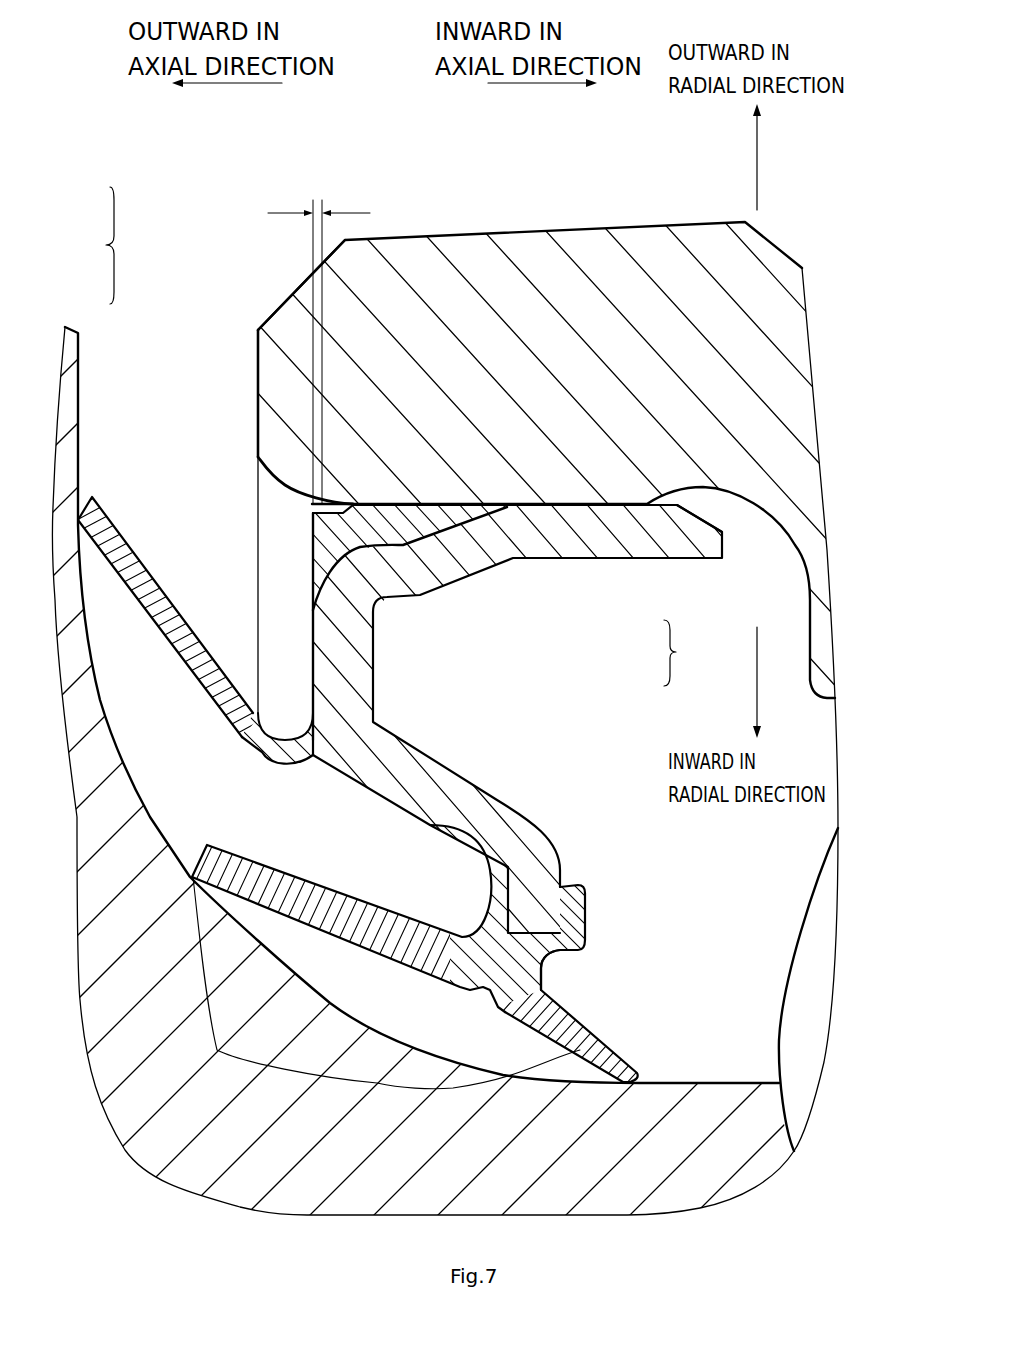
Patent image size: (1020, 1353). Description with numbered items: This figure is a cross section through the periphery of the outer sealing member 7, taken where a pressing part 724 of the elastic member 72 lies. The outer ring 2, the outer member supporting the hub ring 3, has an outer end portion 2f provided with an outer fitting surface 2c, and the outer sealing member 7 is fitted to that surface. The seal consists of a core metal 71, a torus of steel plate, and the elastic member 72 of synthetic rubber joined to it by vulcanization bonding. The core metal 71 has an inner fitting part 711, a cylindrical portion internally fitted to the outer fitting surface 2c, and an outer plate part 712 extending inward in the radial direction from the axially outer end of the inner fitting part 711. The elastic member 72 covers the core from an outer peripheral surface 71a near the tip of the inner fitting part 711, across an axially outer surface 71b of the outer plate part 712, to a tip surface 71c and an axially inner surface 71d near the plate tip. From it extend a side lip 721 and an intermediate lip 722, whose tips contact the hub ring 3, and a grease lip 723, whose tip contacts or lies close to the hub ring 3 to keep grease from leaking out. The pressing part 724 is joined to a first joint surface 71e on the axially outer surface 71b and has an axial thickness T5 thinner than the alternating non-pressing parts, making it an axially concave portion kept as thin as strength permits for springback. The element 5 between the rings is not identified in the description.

The outer ring 2 is at (645, 222).
The outer fitting surface 2c is at (576, 506).
The outer end portion 2f is at (283, 328).
The hub ring 3 is at (686, 1080).
The rolling element (ball) 5 is at (800, 968).
The outer sealing member 7 is at (400, 635).
The core metal 71 is at (517, 717).
The inner fitting part 711 is at (640, 548).
The outer plate part 712 is at (360, 680).
The outer peripheral surface 71a is at (443, 527).
The axially outer surface 71b is at (258, 328).
The tip surface 71c is at (553, 958).
The axially inner surface 71d is at (565, 907).
The first joint surface 71e is at (305, 612).
The elastic member 72 is at (358, 635).
The side lip 721 is at (177, 592).
The intermediate lip 722 is at (168, 690).
The grease lip 723 is at (204, 845).
The pressing part 724 is at (257, 640).
The axial thickness T5 is at (319, 344).